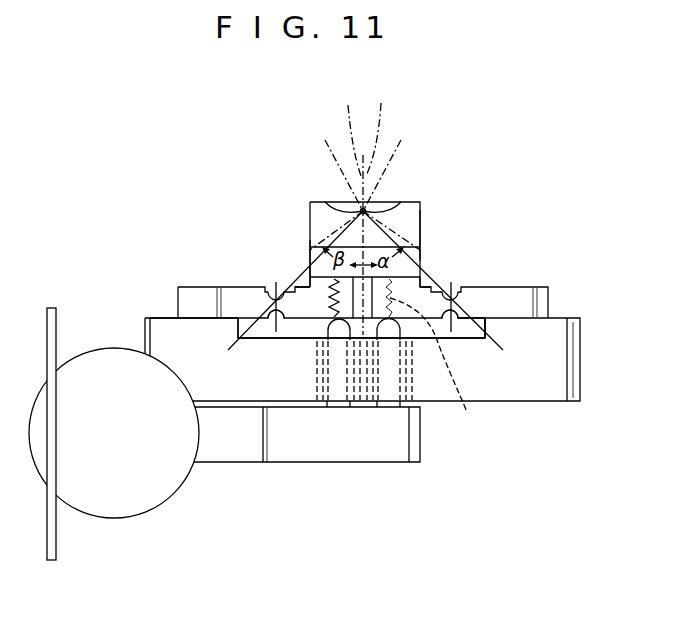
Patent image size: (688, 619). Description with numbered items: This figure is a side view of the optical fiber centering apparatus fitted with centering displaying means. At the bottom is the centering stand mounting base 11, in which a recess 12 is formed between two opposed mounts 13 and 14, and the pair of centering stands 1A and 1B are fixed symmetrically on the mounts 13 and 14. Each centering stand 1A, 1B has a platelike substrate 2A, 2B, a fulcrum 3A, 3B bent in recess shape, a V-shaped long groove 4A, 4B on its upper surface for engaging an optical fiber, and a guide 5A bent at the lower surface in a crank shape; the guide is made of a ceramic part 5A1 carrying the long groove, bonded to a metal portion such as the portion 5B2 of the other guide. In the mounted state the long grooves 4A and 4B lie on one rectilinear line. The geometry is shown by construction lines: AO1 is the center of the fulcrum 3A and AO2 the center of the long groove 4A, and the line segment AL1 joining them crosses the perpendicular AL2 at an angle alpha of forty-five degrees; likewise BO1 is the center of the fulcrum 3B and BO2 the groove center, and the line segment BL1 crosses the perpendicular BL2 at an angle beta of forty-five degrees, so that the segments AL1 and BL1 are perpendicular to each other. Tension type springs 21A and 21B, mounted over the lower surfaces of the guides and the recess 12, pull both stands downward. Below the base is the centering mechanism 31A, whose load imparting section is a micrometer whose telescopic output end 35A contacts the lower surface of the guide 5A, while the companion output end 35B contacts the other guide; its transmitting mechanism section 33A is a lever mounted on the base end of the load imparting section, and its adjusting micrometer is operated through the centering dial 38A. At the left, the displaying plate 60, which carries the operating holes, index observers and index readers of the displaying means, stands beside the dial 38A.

The centering stand mounting base 11 is at (579, 362).
The recess 12 is at (471, 333).
The mount 13 is at (566, 327).
The mount 14 is at (155, 324).
The centering stand 1A is at (419, 203).
The centering stand 1B is at (305, 250).
The platelike substrate 2A is at (545, 290).
The platelike substrate 2B is at (185, 295).
The fulcrum 3A is at (456, 300).
The fulcrum 3B is at (270, 294).
The V-shaped long groove 4A is at (363, 211).
The V-shaped long groove 4B is at (363, 211).
The guide 5A is at (422, 236).
The ceramic part of guide 5A1 is at (422, 222).
The metal portion of guide 5B2 is at (302, 290).
The tension type spring 21A is at (327, 294).
The tension type spring 21B is at (436, 359).
The centering mechanism 31A is at (273, 469).
The transmitting mechanism section 33A is at (386, 453).
The output end 35A is at (400, 330).
The output end 35B is at (345, 341).
The centering dial 38A is at (180, 484).
The displaying plate 60 is at (49, 355).
The center of fulcrum 3A AO1 is at (452, 287).
The center of fulcrum 3B BO1 is at (276, 287).
The center of long groove 4A AO2 is at (363, 211).
The center of long groove BO2 is at (363, 211).
The line segment AL1 is at (360, 184).
The line segment BL1 is at (367, 184).
The perpendicular AL2 is at (389, 211).
The perpendicular BL2 is at (343, 131).